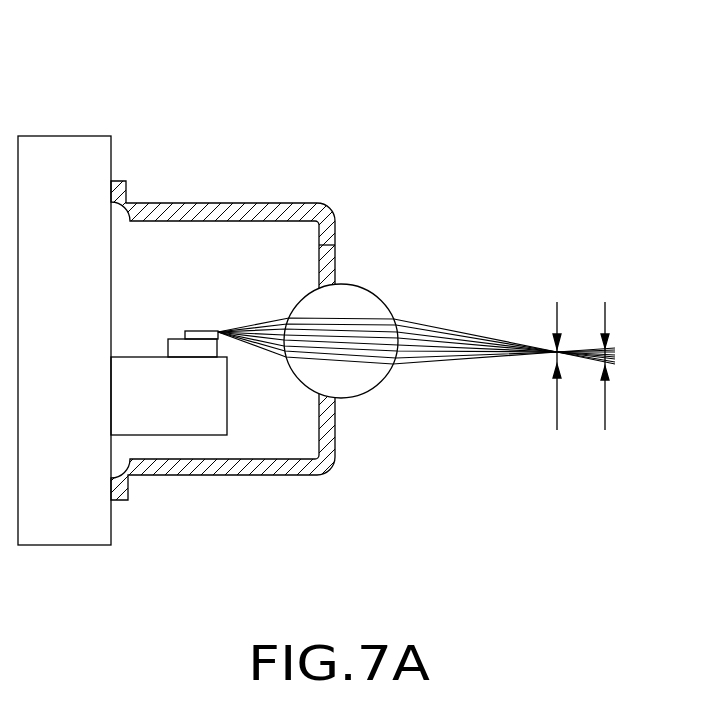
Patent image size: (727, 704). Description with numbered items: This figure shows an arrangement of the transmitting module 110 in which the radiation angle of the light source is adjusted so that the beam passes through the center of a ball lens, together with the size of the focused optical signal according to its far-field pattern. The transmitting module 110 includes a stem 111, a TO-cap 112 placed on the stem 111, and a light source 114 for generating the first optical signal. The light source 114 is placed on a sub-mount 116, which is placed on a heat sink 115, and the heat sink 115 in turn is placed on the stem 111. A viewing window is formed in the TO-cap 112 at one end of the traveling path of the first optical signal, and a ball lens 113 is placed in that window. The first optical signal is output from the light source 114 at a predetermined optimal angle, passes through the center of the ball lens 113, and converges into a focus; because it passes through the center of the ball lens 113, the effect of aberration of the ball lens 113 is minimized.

The transmitting module 110 is at (207, 22).
The stem 111 is at (62, 140).
The TO-cap 112 is at (268, 204).
The ball lens 113 is at (366, 302).
The light source 114 is at (199, 336).
The heat sink 115 is at (176, 418).
The sub-mount 116 is at (178, 353).